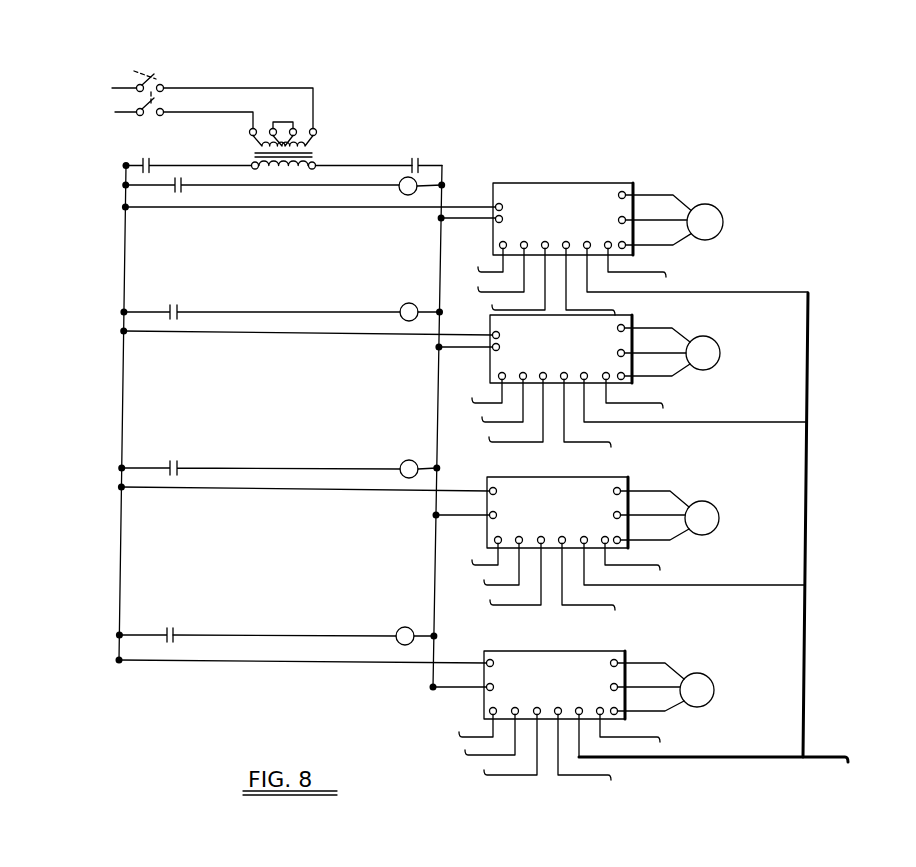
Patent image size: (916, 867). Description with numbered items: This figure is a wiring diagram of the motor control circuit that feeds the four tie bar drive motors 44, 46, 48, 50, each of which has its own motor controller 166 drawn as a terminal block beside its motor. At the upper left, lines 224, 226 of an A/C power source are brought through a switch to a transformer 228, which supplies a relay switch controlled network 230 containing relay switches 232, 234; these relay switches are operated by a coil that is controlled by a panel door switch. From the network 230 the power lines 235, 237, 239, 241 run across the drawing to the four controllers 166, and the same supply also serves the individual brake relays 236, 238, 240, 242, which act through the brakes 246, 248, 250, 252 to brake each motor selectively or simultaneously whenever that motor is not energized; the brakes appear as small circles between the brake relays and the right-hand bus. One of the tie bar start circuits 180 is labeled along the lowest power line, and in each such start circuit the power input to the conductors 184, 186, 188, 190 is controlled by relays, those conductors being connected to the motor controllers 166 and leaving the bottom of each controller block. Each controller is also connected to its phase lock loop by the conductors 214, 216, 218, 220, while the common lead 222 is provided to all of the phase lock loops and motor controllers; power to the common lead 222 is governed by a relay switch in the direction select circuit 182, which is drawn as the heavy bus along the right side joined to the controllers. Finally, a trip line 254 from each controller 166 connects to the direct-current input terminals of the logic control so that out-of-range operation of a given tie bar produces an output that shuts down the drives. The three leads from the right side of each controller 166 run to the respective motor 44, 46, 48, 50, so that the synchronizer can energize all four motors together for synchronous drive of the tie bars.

The power supply line 224 is at (118, 87).
The power supply line 226 is at (115, 112).
The transformer 228 is at (317, 148).
The relay switch controlled network 230 is at (368, 160).
The relay switch 232 is at (150, 160).
The relay switch 234 is at (420, 160).
The power line 235 is at (266, 210).
The brake relay 236 is at (187, 186).
The power line 237 is at (245, 333).
The brake relay 238 is at (178, 306).
The power line 239 is at (250, 489).
The brake relay 240 is at (183, 448).
The power line 241 is at (282, 662).
The brake relay 242 is at (177, 630).
The brake 246 is at (404, 194).
The brake 248 is at (406, 304).
The brake 250 is at (407, 460).
The brake 252 is at (403, 628).
The tie bar start circuit 180 is at (247, 634).
The direction select circuit 182 is at (808, 336).
The motor controller 166 is at (578, 192).
The motor 44 is at (712, 218).
The motor 46 is at (713, 353).
The motor 48 is at (712, 518).
The motor 50 is at (700, 688).
The conductor 184 is at (481, 269).
The conductor 186 is at (478, 384).
The conductor 188 is at (476, 553).
The conductor 190 is at (462, 737).
The conductor 214 is at (482, 292).
The conductor 216 is at (486, 422).
The conductor 218 is at (487, 585).
The conductor 220 is at (468, 755).
The common lead 222 is at (494, 309).
The trip line 254 is at (612, 310).